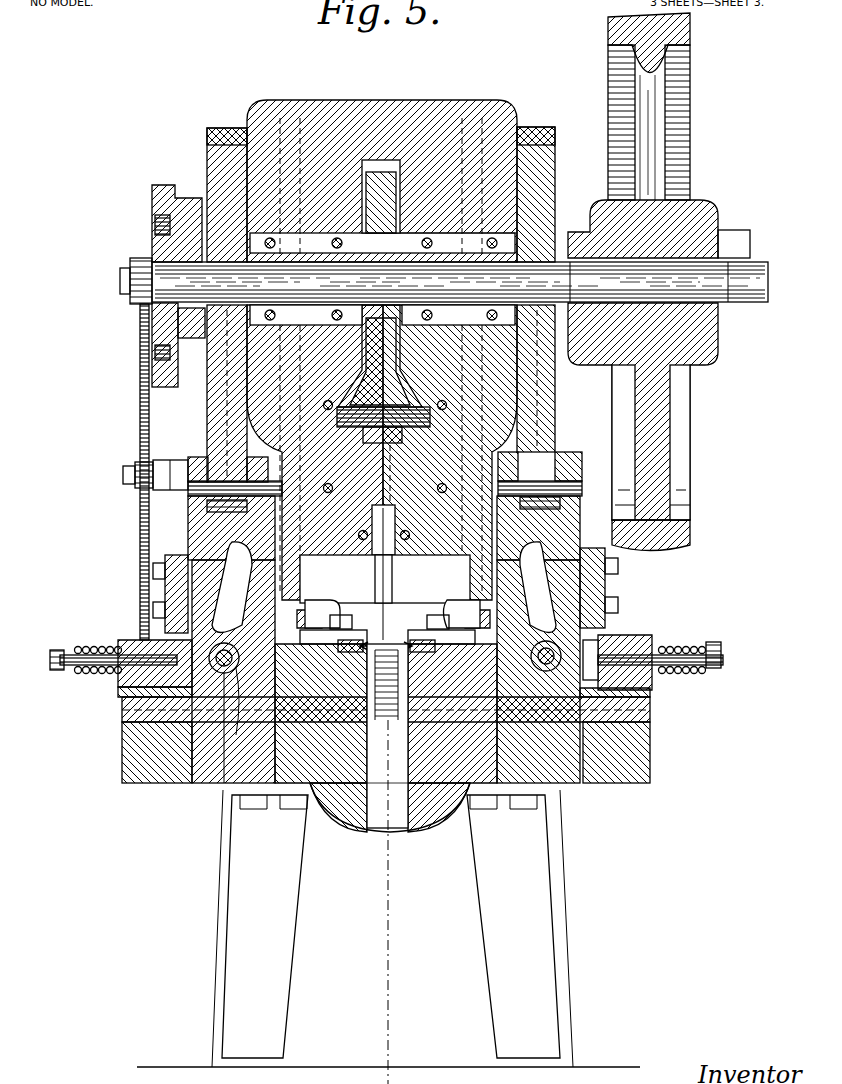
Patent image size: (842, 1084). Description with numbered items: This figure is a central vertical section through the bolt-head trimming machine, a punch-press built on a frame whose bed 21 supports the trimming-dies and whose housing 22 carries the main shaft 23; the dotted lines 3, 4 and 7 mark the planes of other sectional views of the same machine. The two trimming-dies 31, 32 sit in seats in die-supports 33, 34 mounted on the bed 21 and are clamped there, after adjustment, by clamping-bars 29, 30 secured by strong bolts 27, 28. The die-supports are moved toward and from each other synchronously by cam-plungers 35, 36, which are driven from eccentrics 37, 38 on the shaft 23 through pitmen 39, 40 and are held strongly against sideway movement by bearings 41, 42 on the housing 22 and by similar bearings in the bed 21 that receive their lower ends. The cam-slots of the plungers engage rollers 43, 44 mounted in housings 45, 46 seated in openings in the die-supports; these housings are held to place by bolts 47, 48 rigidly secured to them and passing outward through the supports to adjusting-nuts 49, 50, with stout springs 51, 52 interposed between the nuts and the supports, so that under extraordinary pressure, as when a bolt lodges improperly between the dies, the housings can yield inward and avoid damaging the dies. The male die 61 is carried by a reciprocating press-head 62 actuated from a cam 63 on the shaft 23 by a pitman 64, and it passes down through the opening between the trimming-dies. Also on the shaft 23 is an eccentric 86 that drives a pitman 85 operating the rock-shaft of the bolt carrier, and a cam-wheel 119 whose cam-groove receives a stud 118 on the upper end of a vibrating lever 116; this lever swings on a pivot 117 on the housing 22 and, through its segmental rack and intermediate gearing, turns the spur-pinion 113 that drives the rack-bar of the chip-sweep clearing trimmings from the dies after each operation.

The dotted lines 3 3 is at (229, 262).
The dotted lines 4 4 is at (320, 83).
The dotted line 7 7 is at (32, 605).
The frame-bed 21 is at (135, 762).
The housing 22 is at (290, 112).
The main shaft 23 is at (780, 334).
The bolt 27 is at (455, 600).
The bolt 28 is at (330, 610).
The clamping-bar 29 is at (441, 628).
The clamping-bar 30 is at (333, 628).
The trimming-die 31 is at (406, 640).
The trimming-die 32 is at (370, 640).
The die-support 33 is at (452, 738).
The die-support 34 is at (321, 738).
The cam-plunger 35 is at (570, 540).
The cam-plunger 36 is at (200, 542).
The eccentric 37 is at (555, 178).
The eccentric 38 is at (207, 162).
The pitman 39 is at (550, 430).
The pitman 40 is at (220, 426).
The bearing 41 is at (620, 595).
The bearing 42 is at (165, 591).
The roller 43 is at (600, 650).
The roller 44 is at (226, 675).
The housing 45 is at (650, 695).
The housing 46 is at (128, 692).
The bolt 47 is at (722, 666).
The bolt 48 is at (58, 650).
The adjusting-nut 49 is at (714, 642).
The adjusting-nut 50 is at (58, 672).
The spring 51 is at (695, 672).
The spring 52 is at (82, 648).
The male die 61 is at (383, 596).
The press-head 62 is at (382, 452).
The cam 63 is at (400, 210).
The pitman 64 is at (365, 186).
The pitman 85 is at (193, 338).
The eccentric 86 is at (185, 198).
The spur-pinion 113 is at (387, 864).
The vibrating lever 116 is at (142, 382).
The pivot 117 is at (122, 475).
The stud 118 is at (138, 262).
The cam-wheel 119 is at (158, 226).